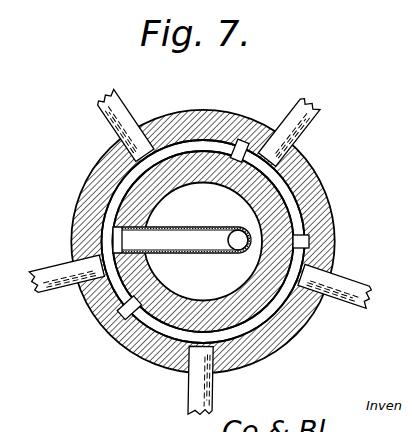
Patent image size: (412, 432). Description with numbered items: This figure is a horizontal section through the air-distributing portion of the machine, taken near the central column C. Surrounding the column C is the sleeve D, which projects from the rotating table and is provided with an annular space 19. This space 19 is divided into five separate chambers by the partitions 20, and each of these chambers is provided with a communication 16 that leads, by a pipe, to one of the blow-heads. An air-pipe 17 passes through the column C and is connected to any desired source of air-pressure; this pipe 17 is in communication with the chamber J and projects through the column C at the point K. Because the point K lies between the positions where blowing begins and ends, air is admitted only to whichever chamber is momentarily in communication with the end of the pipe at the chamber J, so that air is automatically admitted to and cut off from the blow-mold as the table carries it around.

The communication 16 is at (110, 123).
The air-pipe 17 is at (205, 245).
The space 19 is at (167, 330).
The partitions 20 is at (309, 241).
The column C is at (232, 175).
The sleeve D is at (318, 214).
The chamber J is at (106, 238).
The point K is at (113, 231).